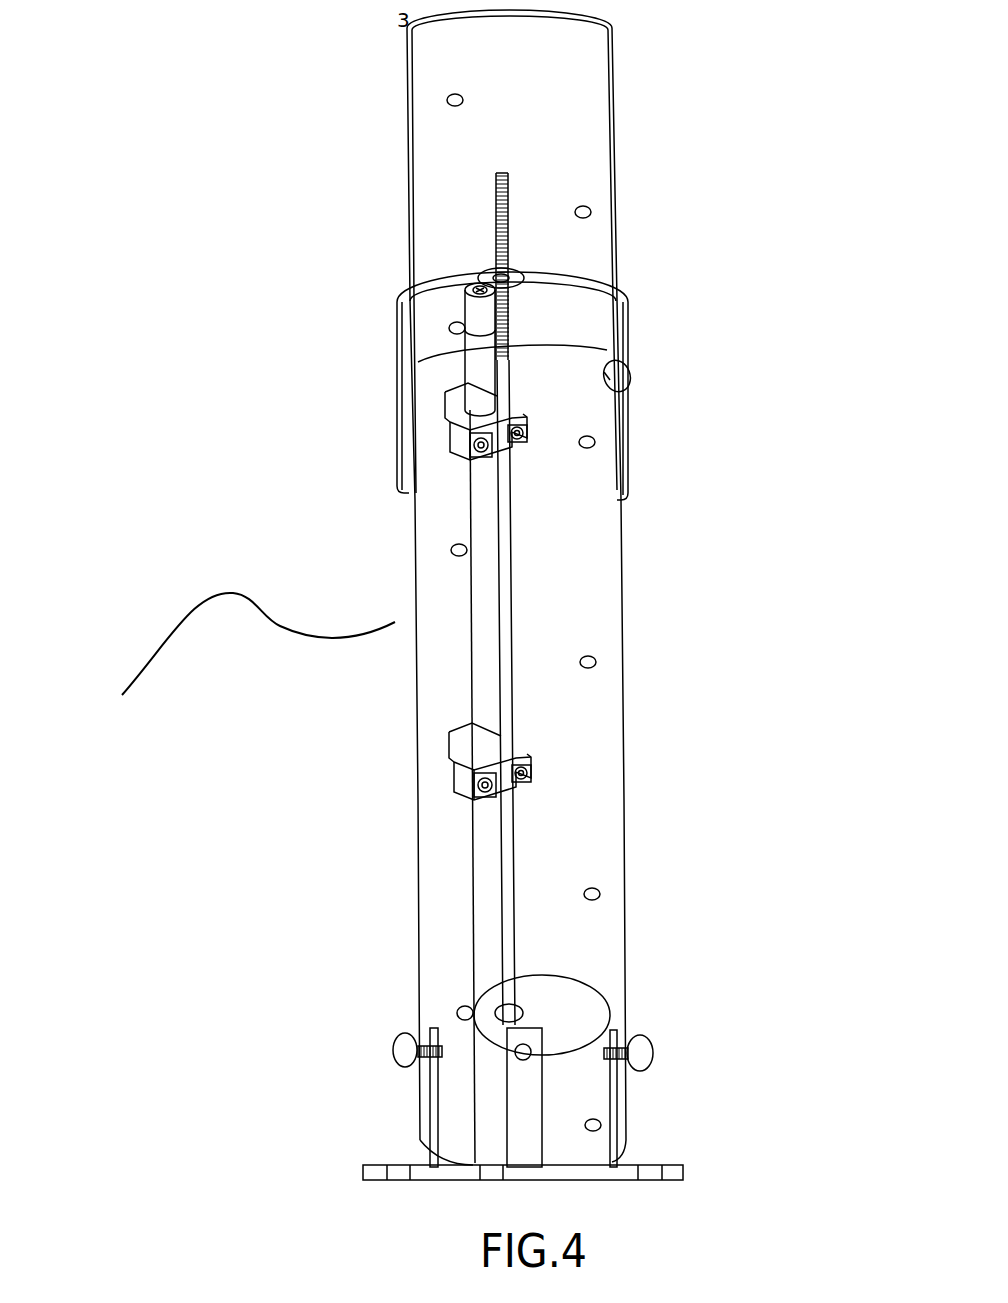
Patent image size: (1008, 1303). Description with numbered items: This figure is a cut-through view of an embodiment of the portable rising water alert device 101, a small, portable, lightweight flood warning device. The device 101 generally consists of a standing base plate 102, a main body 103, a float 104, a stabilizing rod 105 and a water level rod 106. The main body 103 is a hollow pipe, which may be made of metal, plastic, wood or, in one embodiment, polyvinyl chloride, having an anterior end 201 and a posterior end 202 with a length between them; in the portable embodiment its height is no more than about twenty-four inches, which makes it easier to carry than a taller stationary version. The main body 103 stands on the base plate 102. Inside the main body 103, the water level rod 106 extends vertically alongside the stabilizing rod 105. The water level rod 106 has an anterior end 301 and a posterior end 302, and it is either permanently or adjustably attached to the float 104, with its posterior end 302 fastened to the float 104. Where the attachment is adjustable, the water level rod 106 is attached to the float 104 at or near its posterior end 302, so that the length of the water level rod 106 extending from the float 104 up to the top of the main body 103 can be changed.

The portable rising water alert device 101 is at (224, 652).
The standing base plate 102 is at (686, 1166).
The main body 103 is at (626, 826).
The float 104 is at (568, 1007).
The stabilizing rod 105 is at (483, 727).
The water level rod 106 is at (509, 614).
The anterior end of main body 201 is at (620, 508).
The posterior end of main body 202 is at (418, 1078).
The anterior end of water level rod 301 is at (500, 172).
The posterior end of water level rod 302 is at (485, 1133).